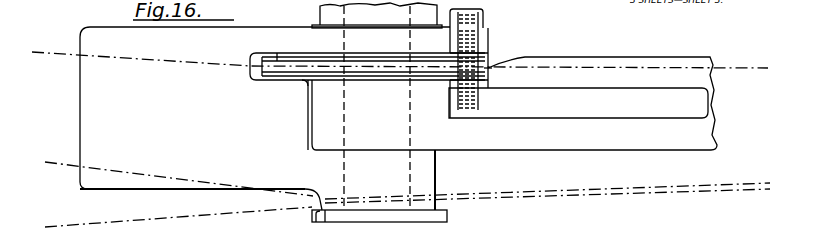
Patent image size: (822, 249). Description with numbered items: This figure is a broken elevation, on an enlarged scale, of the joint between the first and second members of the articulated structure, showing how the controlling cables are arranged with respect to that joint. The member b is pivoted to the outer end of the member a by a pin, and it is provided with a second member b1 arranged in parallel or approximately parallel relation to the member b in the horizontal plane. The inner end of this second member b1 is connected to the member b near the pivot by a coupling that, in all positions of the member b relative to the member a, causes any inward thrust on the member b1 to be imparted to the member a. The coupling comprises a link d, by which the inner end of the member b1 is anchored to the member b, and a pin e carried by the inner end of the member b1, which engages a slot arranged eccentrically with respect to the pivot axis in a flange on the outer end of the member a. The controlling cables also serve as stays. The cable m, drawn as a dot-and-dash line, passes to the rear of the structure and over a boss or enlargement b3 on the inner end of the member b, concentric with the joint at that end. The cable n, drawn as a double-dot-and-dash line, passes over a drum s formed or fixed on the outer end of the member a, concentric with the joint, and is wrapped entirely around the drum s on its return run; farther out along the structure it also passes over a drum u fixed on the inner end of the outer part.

The member a is at (265, 118).
The member b is at (631, 137).
The second member b1 is at (665, 106).
The boss or enlargement b3 is at (277, 55).
The pin e is at (468, 12).
The link d is at (490, 67).
The drum u is at (343, 125).
The drum s is at (322, 216).
The cable m is at (58, 50).
The cable n is at (99, 218).